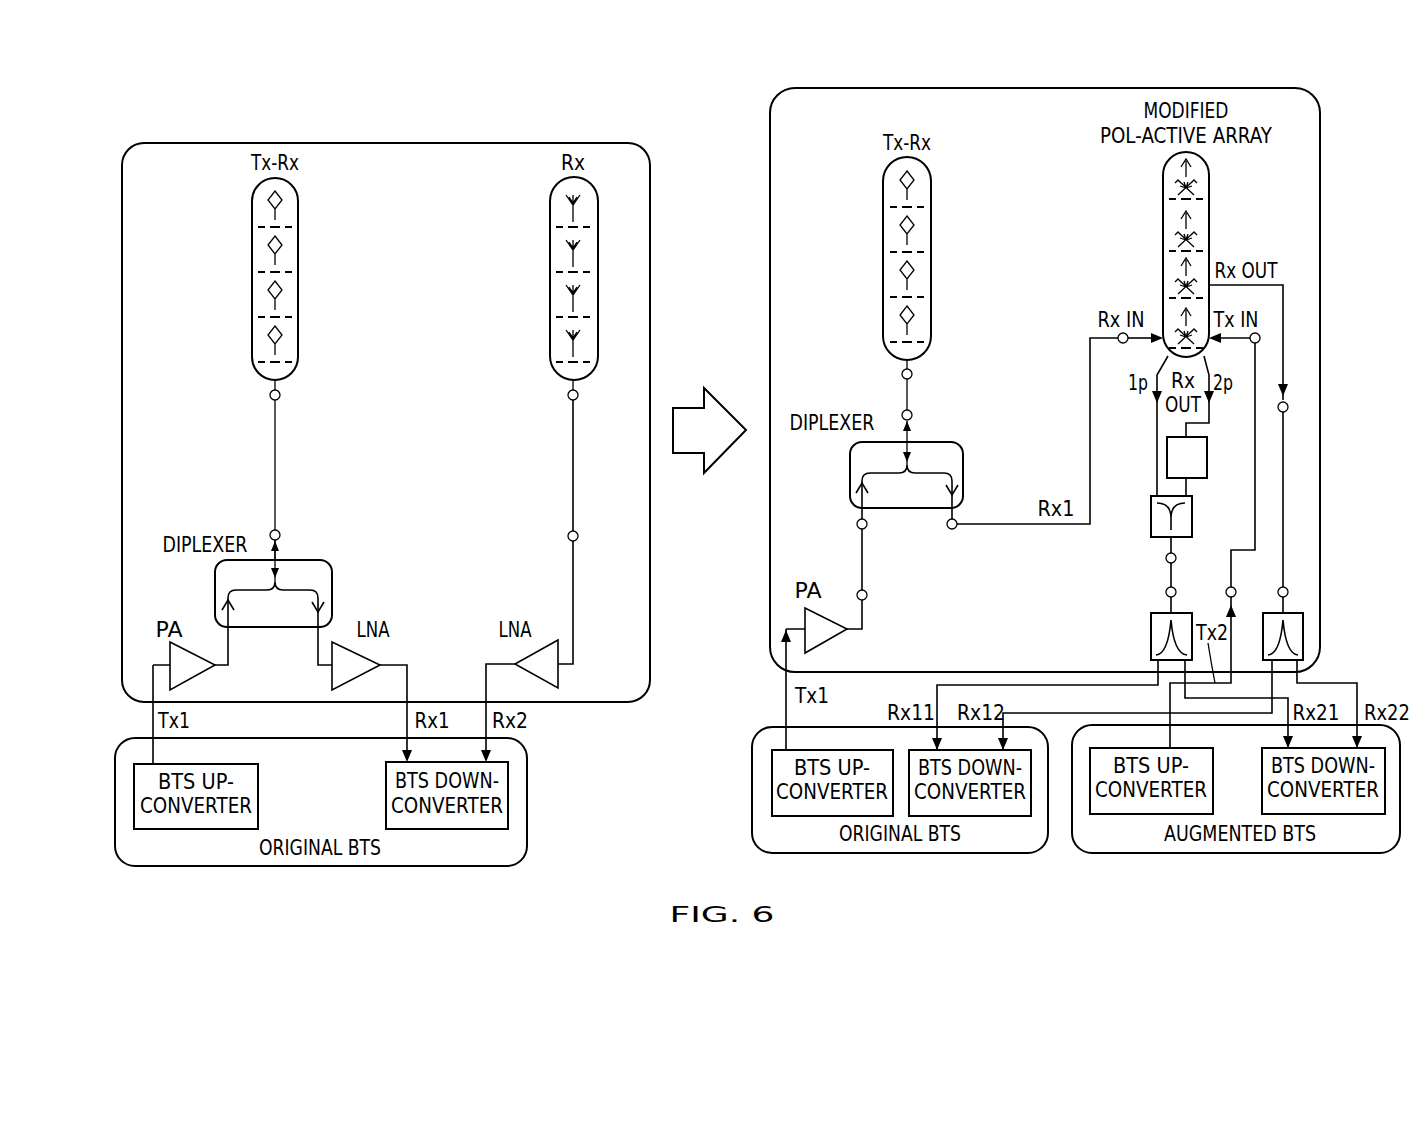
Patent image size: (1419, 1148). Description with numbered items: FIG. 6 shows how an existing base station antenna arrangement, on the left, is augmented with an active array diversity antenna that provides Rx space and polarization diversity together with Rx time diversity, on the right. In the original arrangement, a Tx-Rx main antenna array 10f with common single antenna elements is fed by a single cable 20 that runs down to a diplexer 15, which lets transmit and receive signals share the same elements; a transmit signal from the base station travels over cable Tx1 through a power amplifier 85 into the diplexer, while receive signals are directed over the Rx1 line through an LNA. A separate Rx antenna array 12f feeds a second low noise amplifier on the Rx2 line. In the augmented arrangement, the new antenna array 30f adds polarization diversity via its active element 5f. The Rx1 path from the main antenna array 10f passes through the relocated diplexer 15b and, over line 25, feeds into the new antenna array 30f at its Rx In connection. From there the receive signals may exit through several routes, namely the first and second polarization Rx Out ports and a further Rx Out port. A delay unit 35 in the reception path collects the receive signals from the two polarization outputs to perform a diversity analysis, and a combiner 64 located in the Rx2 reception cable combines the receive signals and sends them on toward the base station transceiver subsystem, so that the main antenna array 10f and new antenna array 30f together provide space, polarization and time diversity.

The main antenna array 10f is at (298, 247).
The Rx antenna array 12f is at (550, 222).
The cable 20 is at (278, 459).
The diplexer 15 is at (332, 579).
The power amplifier 85 is at (205, 678).
The relocated diplexer 15b is at (850, 482).
The Rx1 connection line 25 is at (982, 521).
The active element 5f is at (1172, 195).
The new antenna array 30f is at (1195, 254).
The delay unit 35 is at (1207, 452).
The combiner 64 is at (1192, 513).